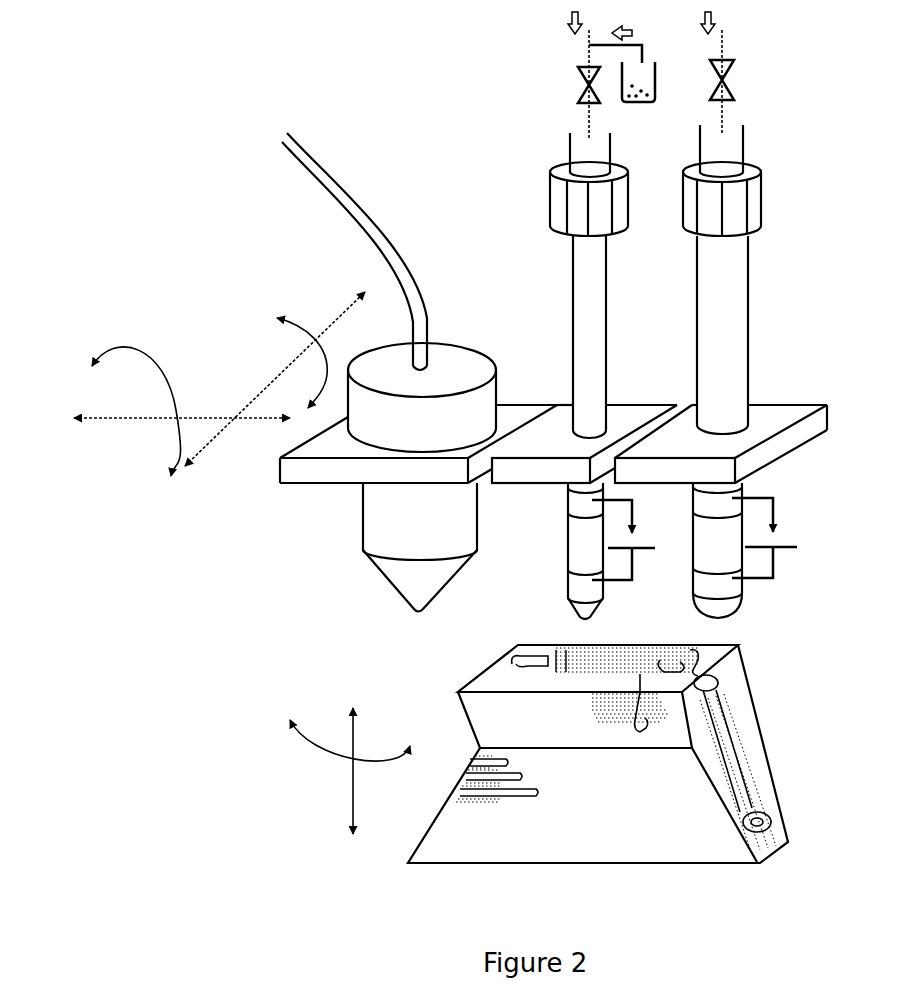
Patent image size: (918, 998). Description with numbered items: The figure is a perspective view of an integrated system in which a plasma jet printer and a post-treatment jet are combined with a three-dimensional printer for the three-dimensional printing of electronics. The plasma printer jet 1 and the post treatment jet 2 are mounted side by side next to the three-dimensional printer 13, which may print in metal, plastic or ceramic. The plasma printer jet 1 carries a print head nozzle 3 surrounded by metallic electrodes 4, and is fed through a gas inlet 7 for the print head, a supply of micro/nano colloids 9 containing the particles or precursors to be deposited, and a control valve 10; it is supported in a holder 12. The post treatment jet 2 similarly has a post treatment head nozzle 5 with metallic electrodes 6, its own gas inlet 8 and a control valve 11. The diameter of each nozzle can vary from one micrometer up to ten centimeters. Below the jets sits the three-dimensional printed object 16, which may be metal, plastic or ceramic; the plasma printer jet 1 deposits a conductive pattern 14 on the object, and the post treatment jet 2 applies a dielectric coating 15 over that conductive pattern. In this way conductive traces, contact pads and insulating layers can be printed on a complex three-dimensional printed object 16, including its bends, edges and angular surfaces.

The plasma printer jet 1 is at (584, 325).
The post treatment jet 2 is at (735, 325).
The print head nozzle 3 is at (569, 607).
The metallic electrodes 4 is at (566, 576).
The post treatment head nozzle 5 is at (692, 607).
The metallic electrodes 6 is at (690, 576).
The gas inlet 7 is at (562, 20).
The second gas inlet 8 is at (720, 20).
The micro/nano colloids 9 is at (651, 56).
The control valve 10 is at (574, 89).
The control valve 11 is at (738, 80).
The holder 12 is at (624, 414).
The 3D printer 13 is at (443, 352).
The conductive pattern 14 is at (518, 654).
The dielectric coating 15 is at (548, 669).
The 3D printed object 16 is at (455, 817).